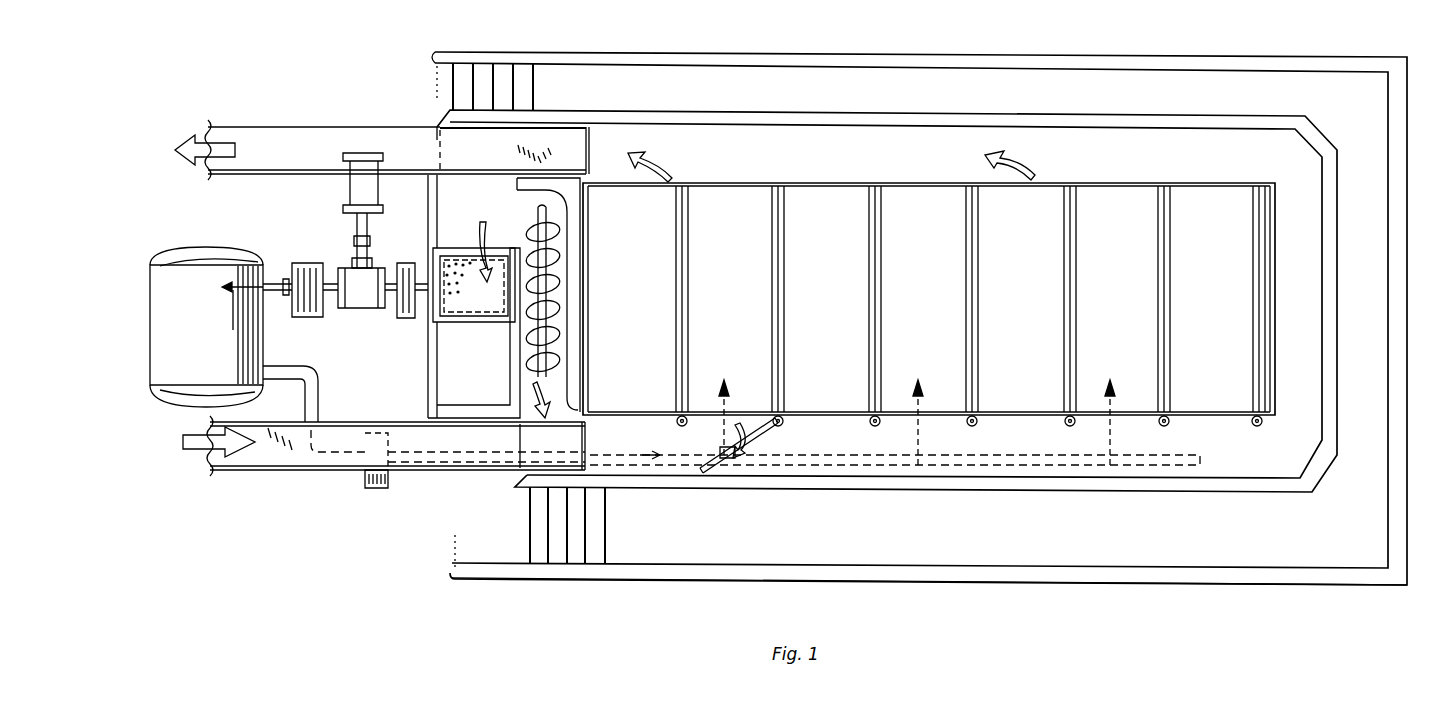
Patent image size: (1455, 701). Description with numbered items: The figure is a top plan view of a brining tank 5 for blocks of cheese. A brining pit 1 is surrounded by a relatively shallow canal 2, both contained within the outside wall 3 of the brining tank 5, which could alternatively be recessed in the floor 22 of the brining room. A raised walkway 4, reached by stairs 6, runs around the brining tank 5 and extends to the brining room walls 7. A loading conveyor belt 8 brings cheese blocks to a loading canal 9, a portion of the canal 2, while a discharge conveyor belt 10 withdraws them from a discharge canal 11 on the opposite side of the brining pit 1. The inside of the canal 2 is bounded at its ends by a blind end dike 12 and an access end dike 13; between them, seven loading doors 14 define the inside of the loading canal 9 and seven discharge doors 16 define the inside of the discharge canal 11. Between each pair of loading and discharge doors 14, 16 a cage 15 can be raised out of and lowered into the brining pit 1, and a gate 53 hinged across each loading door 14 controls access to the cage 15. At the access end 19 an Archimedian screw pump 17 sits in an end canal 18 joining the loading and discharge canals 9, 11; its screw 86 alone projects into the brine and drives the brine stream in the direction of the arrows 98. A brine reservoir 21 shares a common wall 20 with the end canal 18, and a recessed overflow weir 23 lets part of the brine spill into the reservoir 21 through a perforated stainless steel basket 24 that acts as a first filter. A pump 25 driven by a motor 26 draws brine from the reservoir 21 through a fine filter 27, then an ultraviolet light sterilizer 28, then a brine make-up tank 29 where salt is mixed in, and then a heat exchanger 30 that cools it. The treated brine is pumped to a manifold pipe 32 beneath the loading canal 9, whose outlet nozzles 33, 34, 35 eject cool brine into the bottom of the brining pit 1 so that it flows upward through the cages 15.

The brining pit 1 is at (1133, 180).
The canal 2 is at (1290, 163).
The outside wall 3 is at (545, 421).
The raised walkway 4 is at (1350, 296).
The brining tank 5 is at (565, 80).
The stairs 6 is at (488, 88).
The brining room walls 7 is at (700, 575).
The loading conveyor belt 8 is at (265, 450).
The loading canal 9 is at (1092, 470).
The discharge conveyor belt 10 is at (298, 150).
The discharge canal 11 is at (818, 142).
The blind end dike 12 is at (1268, 257).
The access end dike 13 is at (588, 400).
The loading doors 14 is at (675, 425).
The cage 15 is at (929, 299).
The discharge doors 16 is at (672, 180).
The Archimedian screw pump 17 is at (566, 256).
The end canal 18 is at (535, 418).
The access end 19 is at (432, 118).
The common wall 20 is at (428, 409).
The brine reservoir 21 is at (473, 354).
The floor 22 is at (428, 389).
The recessed overflow weir 23 is at (462, 236).
The perforated stainless steel basket 24 is at (478, 312).
The pump 25 is at (358, 308).
The motor 26 is at (343, 190).
The fine filter 27 is at (405, 318).
The ultraviolet light sterilizer 28 is at (305, 263).
The brine make-up tank 29 is at (212, 250).
The heat exchanger 30 is at (360, 491).
The manifold pipe 32 is at (440, 460).
The outlet nozzle 33 is at (742, 400).
The outlet nozzle 34 is at (915, 470).
The outlet nozzle 35 is at (1115, 445).
The gate 53 is at (762, 470).
The screw 86 is at (556, 290).
The arrows 98 is at (672, 178).